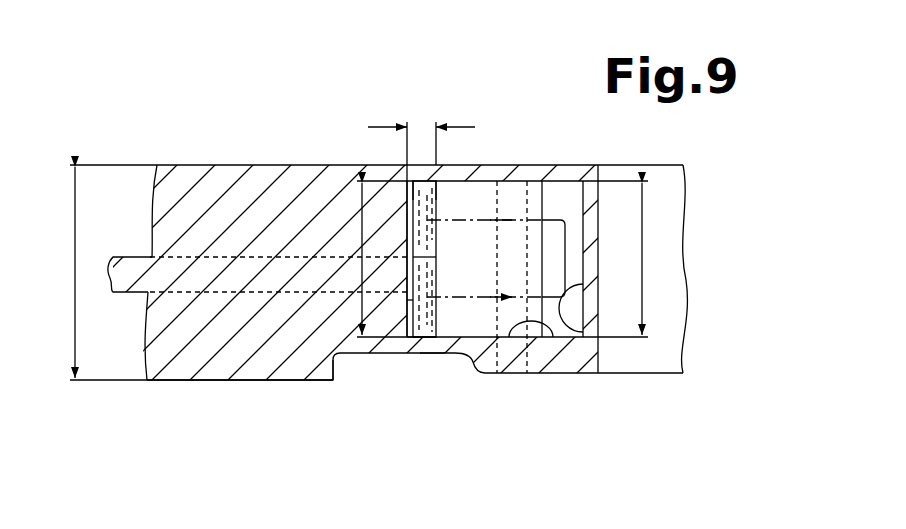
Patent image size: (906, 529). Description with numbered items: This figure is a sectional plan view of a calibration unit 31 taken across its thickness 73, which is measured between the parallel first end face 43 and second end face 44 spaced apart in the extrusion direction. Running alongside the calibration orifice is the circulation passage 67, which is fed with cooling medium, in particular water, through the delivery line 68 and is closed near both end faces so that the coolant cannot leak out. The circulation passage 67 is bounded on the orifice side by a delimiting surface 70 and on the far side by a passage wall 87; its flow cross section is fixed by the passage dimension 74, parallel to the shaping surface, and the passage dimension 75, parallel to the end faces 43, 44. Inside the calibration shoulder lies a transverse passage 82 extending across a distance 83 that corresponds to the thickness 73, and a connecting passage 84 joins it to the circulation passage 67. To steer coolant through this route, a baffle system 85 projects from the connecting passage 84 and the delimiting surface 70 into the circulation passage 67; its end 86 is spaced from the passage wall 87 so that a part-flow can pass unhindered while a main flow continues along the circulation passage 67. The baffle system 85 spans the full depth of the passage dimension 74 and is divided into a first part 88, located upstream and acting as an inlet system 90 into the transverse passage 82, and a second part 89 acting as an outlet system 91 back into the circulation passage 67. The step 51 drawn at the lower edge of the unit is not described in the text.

The calibration unit 31 is at (235, 352).
The first end face 43 is at (178, 381).
The second end face 44 is at (163, 163).
The shoulder 51 is at (345, 372).
The circulation passage 67 is at (418, 338).
The delivery line 68 is at (125, 257).
The delimiting surface 70 is at (407, 223).
The thickness 73 is at (75, 320).
The passage dimension 74 is at (362, 250).
The passage dimension 75 is at (422, 126).
The transverse passage 82 is at (598, 337).
The distance 83 is at (645, 258).
The connecting passage 84 is at (553, 338).
The baffle system 85 is at (418, 180).
The end 86 is at (410, 307).
The passage wall 87 is at (413, 237).
The first part 88 is at (430, 315).
The second part 89 is at (421, 242).
The inlet system 90 is at (432, 356).
The outlet system 91 is at (431, 180).